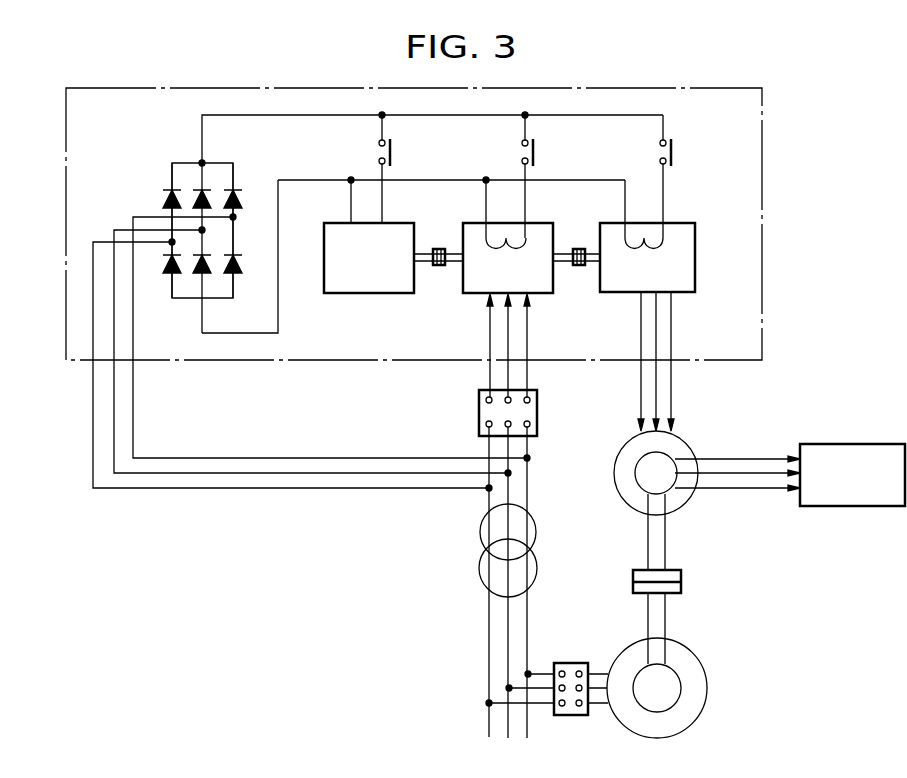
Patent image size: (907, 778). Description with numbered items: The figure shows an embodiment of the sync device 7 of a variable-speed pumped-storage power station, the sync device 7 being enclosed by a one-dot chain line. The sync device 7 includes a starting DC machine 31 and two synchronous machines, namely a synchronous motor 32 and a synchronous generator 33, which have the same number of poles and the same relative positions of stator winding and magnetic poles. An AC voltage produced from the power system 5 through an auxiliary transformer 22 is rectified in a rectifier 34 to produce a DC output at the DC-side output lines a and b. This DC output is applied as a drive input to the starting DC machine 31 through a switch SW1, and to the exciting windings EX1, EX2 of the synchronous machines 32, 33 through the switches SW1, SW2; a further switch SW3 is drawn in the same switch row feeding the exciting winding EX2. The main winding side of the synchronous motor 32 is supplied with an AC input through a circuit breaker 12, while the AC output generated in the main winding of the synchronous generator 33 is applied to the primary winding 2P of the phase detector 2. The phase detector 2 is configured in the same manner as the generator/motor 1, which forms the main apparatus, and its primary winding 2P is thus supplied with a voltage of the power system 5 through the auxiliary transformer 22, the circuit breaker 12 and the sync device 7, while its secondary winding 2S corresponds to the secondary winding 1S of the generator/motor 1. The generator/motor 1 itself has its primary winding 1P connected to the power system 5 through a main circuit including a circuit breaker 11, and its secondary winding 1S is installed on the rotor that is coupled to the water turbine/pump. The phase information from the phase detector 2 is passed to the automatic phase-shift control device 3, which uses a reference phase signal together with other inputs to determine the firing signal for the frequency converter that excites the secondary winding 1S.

The sync device 7 is at (737, 81).
The rectifier 34 is at (181, 153).
The starting DC machine 31 is at (398, 293).
The synchronous motor 32 is at (543, 293).
The synchronous generator 33 is at (685, 292).
The switch SW1 is at (415, 169).
The switch SW2 is at (559, 176).
The switch SW3 is at (699, 176).
The exciting winding EX1 is at (526, 243).
The exciting winding EX2 is at (663, 243).
The DC-side output line a is at (292, 115).
The DC-side output line b is at (308, 180).
The circuit breaker 12 is at (537, 415).
The auxiliary transformer 22 is at (536, 560).
The phase detector 2 is at (650, 460).
The primary winding 2P is at (687, 445).
The secondary winding 2S is at (666, 485).
The automatic phase-shift control device 3 is at (880, 444).
The generator/motor 1 is at (678, 682).
The primary winding 1P is at (700, 663).
The secondary winding 1S is at (677, 703).
The circuit breaker 11 is at (584, 663).
The power system 5 is at (522, 764).